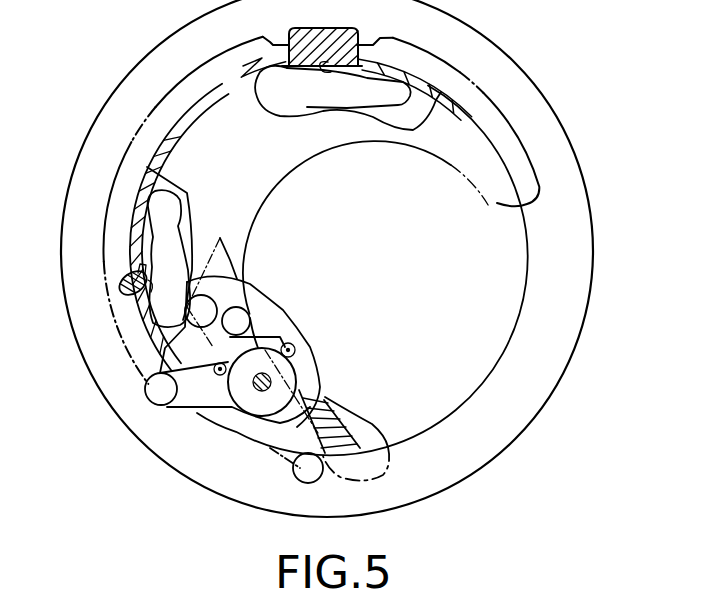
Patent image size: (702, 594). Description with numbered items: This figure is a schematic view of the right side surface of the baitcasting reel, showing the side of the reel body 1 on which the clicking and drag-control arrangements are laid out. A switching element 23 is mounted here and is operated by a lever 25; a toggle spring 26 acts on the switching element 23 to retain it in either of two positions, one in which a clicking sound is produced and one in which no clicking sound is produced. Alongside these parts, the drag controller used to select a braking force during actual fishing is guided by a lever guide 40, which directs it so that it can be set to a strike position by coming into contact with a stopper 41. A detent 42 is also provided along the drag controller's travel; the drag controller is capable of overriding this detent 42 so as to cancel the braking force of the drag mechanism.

The reel body 1 is at (576, 157).
The switching element 23 is at (297, 376).
The lever 25 is at (193, 410).
The toggle spring 26 is at (217, 265).
The lever guide 40 is at (399, 148).
The stopper 41 is at (350, 25).
The detent 42 is at (126, 293).